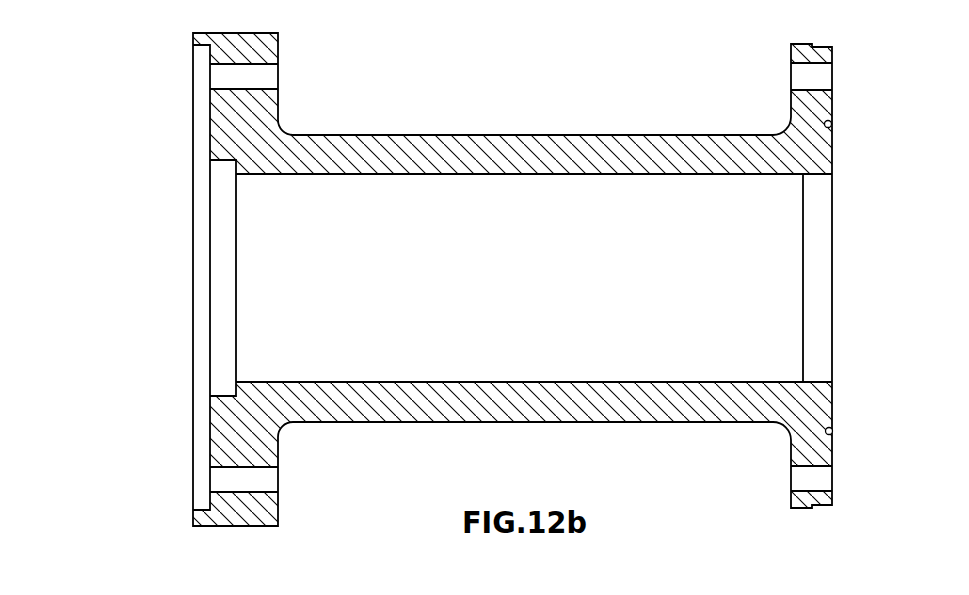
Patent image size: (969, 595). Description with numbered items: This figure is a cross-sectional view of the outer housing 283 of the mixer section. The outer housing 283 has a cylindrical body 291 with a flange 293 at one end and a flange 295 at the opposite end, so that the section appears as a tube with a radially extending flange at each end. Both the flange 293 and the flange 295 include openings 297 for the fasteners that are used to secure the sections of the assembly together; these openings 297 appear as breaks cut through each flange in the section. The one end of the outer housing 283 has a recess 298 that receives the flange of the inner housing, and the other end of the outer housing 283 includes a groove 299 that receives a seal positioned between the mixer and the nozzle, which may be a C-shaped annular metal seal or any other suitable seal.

The outer housing 283 is at (157, 81).
The cylindrical body 291 is at (585, 134).
The flange 293 is at (276, 33).
The flange 295 is at (810, 510).
The openings 297 is at (223, 77).
The recess 298 is at (220, 338).
The groove 299 is at (831, 126).